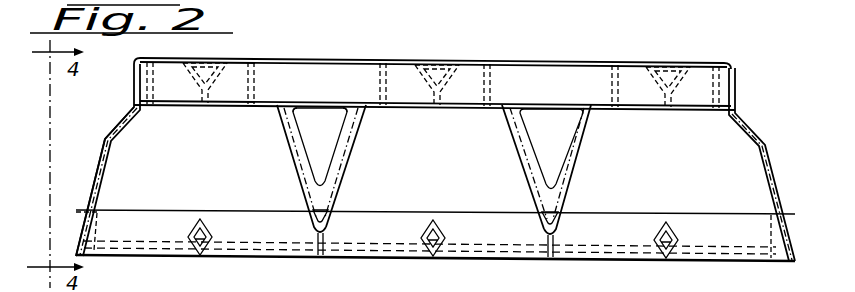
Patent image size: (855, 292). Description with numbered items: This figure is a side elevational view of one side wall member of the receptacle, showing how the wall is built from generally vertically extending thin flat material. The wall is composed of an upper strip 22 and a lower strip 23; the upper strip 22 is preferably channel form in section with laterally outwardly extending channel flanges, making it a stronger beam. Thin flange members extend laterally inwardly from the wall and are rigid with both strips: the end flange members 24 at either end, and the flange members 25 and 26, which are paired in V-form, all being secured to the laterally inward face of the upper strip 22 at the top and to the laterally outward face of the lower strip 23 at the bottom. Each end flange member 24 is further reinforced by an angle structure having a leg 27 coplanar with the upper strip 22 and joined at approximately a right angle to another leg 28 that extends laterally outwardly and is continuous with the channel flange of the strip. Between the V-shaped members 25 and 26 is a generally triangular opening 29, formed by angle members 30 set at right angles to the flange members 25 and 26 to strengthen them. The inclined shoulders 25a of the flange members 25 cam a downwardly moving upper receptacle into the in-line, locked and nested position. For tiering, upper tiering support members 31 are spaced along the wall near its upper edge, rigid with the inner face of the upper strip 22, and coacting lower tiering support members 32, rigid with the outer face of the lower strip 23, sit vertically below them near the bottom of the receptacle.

The upper strip 22 is at (311, 60).
The lower strip 23 is at (428, 203).
The end flange member 24 is at (117, 148).
The flange member 25 is at (289, 151).
The inclined shoulder 25a is at (264, 127).
The flange member 26 is at (355, 150).
The leg 27 is at (122, 123).
The leg 28 is at (106, 143).
The triangular opening 29 is at (438, 148).
The angle member 30 is at (353, 122).
The upper tiering support member 31 is at (234, 55).
The lower tiering support member 32 is at (213, 231).